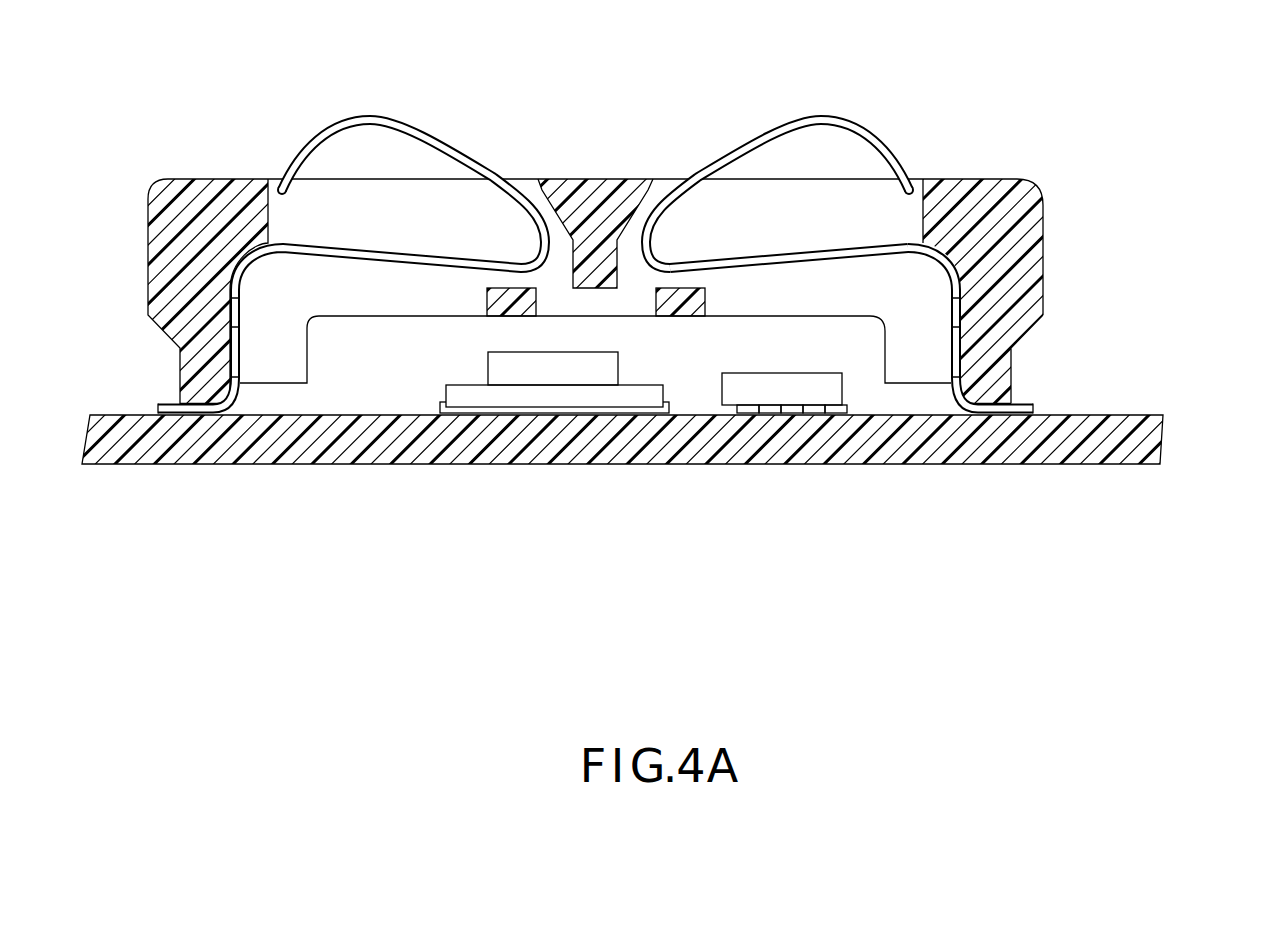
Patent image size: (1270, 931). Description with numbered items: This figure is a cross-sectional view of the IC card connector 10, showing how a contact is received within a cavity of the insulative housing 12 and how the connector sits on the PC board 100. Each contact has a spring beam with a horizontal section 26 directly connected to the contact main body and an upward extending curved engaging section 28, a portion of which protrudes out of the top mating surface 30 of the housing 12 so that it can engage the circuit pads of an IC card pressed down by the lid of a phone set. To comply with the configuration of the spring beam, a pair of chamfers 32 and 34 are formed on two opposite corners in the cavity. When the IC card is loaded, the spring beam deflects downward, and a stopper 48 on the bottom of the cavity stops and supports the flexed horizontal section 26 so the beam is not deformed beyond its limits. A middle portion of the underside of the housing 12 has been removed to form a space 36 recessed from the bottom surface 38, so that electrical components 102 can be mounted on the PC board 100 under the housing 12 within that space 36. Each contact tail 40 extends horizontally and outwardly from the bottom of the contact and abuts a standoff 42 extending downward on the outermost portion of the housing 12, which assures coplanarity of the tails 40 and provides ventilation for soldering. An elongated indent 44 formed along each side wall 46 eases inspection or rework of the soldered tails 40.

The IC card connector 10 is at (983, 167).
The insulative housing 12 is at (1017, 200).
The horizontal section 26 is at (758, 258).
The engaging section 28 is at (827, 123).
The top mating surface 30 is at (210, 177).
The chamfer 32 is at (677, 200).
The chamfer 34 is at (897, 240).
The space 36 is at (350, 325).
The bottom surface 38 is at (272, 383).
The contact tail 40 is at (997, 413).
The standoff 42 is at (997, 388).
The elongated indent 44 is at (1033, 332).
The side wall 46 is at (1030, 240).
The stopper 48 is at (687, 310).
The PC board 100 is at (838, 413).
The electrical components 102 is at (495, 377).